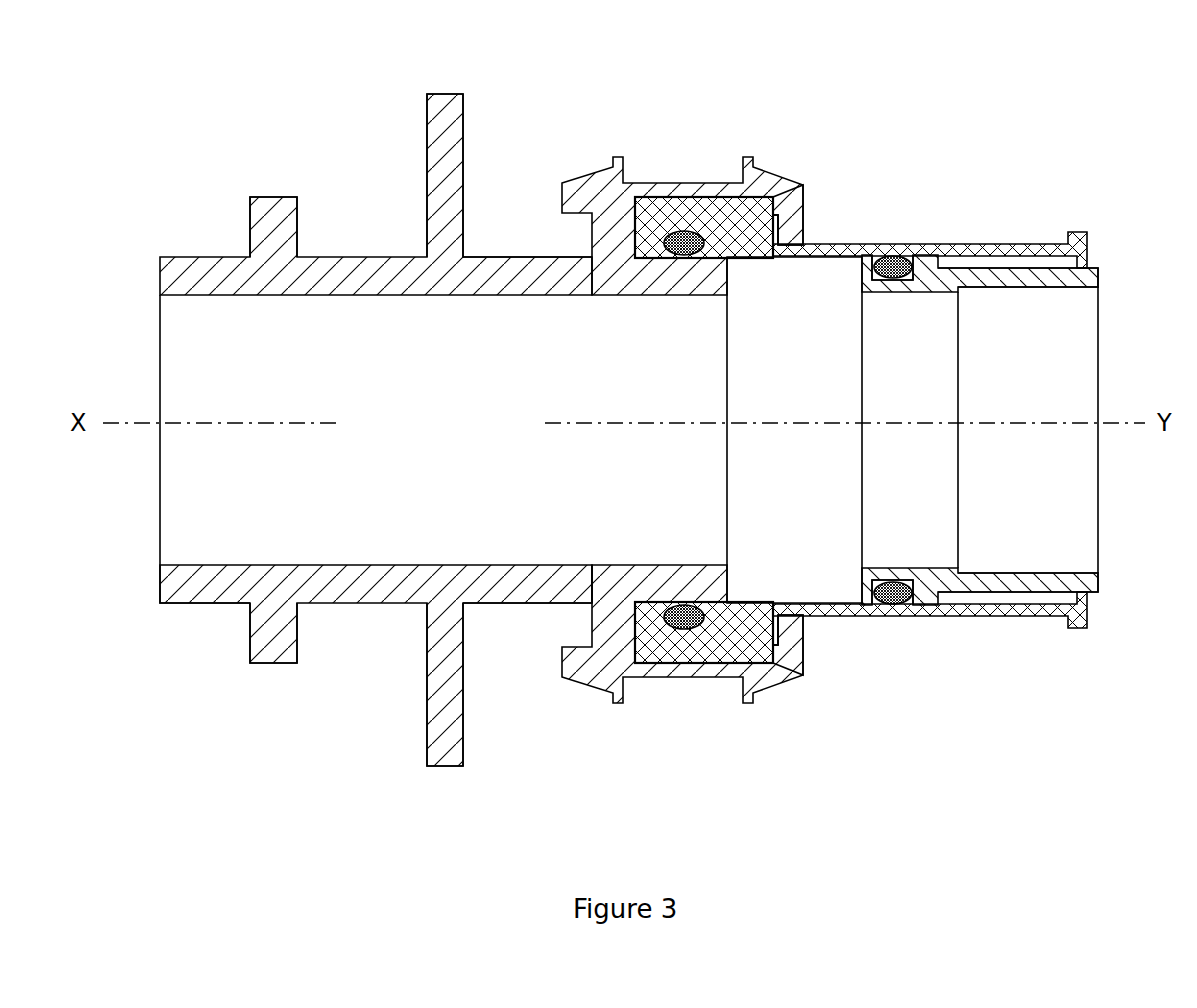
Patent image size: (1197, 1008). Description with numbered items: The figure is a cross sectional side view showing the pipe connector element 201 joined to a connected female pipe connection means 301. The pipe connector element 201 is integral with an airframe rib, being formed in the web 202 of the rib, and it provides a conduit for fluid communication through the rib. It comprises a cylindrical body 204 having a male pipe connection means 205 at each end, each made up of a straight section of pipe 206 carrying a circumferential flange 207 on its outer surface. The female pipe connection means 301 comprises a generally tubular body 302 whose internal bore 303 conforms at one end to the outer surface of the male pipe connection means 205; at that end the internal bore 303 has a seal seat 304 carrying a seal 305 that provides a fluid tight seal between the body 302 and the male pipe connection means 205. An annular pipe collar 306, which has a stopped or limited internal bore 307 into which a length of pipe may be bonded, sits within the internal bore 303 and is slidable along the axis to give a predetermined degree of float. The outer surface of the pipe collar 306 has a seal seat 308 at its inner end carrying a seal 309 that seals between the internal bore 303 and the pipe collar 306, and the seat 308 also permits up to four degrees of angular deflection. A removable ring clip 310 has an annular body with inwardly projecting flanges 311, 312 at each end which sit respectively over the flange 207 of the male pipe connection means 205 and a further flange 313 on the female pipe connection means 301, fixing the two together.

The pipe connector element 201 is at (398, 603).
The web 202 is at (427, 98).
The cylindrical body 204 is at (492, 255).
The male pipe connection means 205 is at (376, 402).
The straight section of pipe 206 is at (180, 607).
The circumferential flange 207 is at (262, 197).
The female pipe connection means 301 is at (853, 438).
The tubular body 302 is at (1045, 243).
The internal bore 303 is at (916, 406).
The seal seat 304 is at (668, 627).
The seal 305 is at (693, 628).
The annular pipe collar 306 is at (987, 583).
The stopped internal bore 307 is at (1057, 491).
The seal seat 308 is at (880, 257).
The seal 309 is at (903, 258).
The ring clip 310 is at (653, 428).
The inwardly projecting flange 311 is at (710, 394).
The inwardly projecting flange 312 is at (788, 208).
The further flange 313 is at (773, 225).